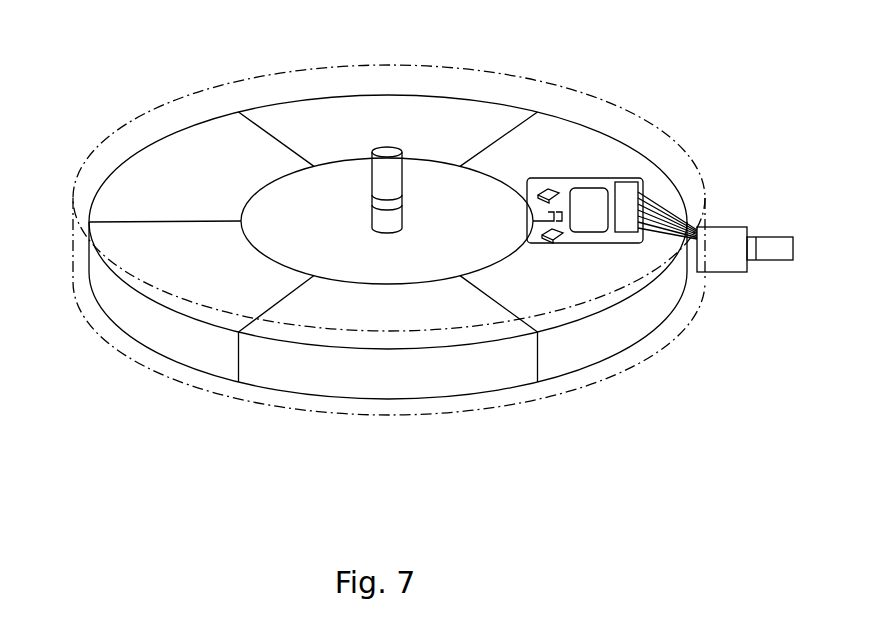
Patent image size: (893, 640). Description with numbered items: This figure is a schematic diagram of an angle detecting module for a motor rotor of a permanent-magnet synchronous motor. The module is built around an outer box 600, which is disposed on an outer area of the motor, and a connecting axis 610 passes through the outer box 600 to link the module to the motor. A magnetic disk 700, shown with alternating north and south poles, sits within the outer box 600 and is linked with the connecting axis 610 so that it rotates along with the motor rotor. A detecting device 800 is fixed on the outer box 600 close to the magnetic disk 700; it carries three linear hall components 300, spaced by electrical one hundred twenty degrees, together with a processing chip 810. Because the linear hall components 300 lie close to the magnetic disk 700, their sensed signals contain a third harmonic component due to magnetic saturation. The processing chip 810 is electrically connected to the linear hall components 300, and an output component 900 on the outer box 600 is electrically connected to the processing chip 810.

The outer box 600 is at (142, 115).
The connecting axis 610 is at (387, 148).
The magnetic disk 700 is at (298, 383).
The detecting device 800 is at (599, 177).
The processing chip 810 is at (595, 222).
The linear hall components 300 is at (558, 180).
The output component 900 is at (728, 227).